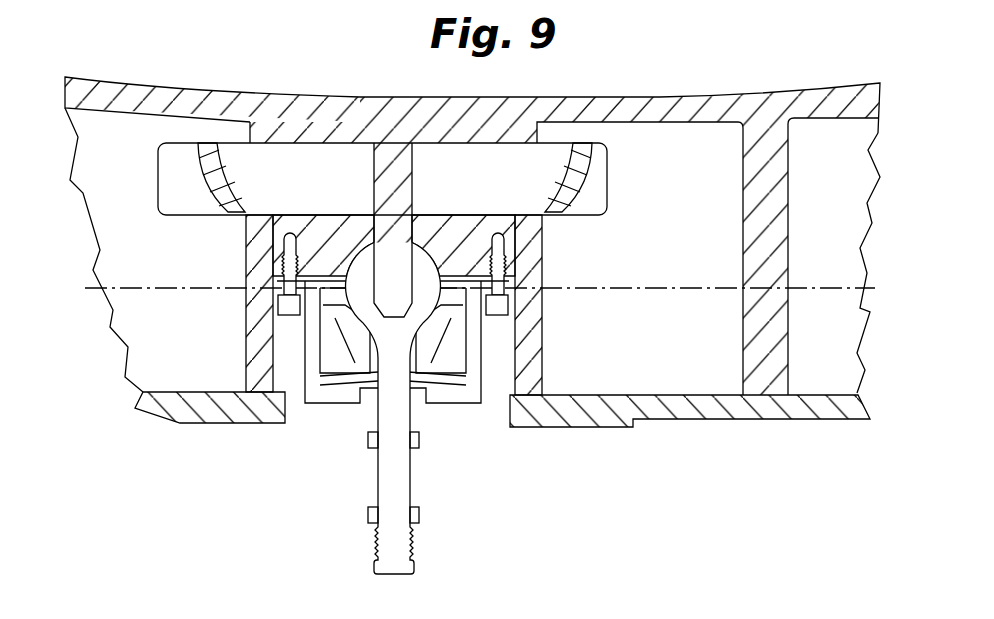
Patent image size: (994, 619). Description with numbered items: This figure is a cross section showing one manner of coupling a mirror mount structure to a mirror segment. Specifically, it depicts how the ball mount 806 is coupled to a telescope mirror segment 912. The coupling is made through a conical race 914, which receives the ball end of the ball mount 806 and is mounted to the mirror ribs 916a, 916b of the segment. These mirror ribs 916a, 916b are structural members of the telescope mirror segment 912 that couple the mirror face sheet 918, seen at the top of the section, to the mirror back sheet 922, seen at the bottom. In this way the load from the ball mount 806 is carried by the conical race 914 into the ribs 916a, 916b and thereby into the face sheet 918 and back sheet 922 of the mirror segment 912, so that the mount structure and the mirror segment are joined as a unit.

The ball mount 806 is at (368, 305).
The telescope mirror segment 912 is at (685, 110).
The conical race 914 is at (470, 363).
The mirror rib 916a is at (527, 243).
The mirror rib 916b is at (260, 253).
The mirror face sheet 918 is at (100, 97).
The mirror back sheet 922 is at (157, 410).